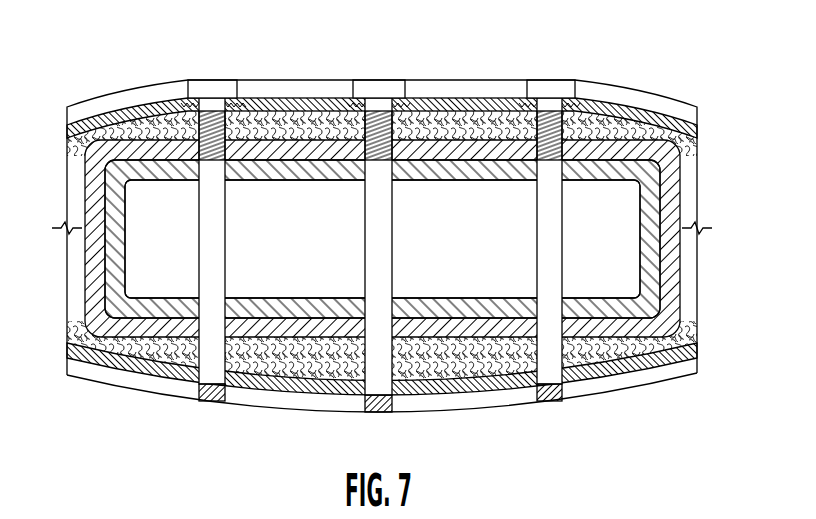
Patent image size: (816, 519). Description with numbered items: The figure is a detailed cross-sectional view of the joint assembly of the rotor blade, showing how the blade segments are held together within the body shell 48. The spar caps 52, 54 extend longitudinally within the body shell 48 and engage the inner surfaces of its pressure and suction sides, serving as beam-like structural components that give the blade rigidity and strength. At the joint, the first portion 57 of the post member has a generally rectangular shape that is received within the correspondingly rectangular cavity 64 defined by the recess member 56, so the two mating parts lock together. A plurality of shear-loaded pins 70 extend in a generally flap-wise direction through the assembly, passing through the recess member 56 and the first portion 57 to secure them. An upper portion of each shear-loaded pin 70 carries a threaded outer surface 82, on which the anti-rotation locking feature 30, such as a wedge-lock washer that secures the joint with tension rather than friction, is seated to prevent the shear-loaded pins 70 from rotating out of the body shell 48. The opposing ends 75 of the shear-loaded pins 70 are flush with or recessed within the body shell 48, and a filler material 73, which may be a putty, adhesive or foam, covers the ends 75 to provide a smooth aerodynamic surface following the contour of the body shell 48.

The anti-rotation locking feature 30 is at (242, 102).
The body shell 48 is at (91, 99).
The spar cap 52 is at (139, 100).
The spar cap 54 is at (502, 407).
The recess member 56 is at (650, 338).
The first portion 57 is at (637, 118).
The cavity 64 is at (307, 243).
The shear-loaded pin 70 is at (199, 90).
The filler material 73 is at (270, 97).
The ends 75 is at (213, 372).
The threaded outer surface 82 is at (246, 105).